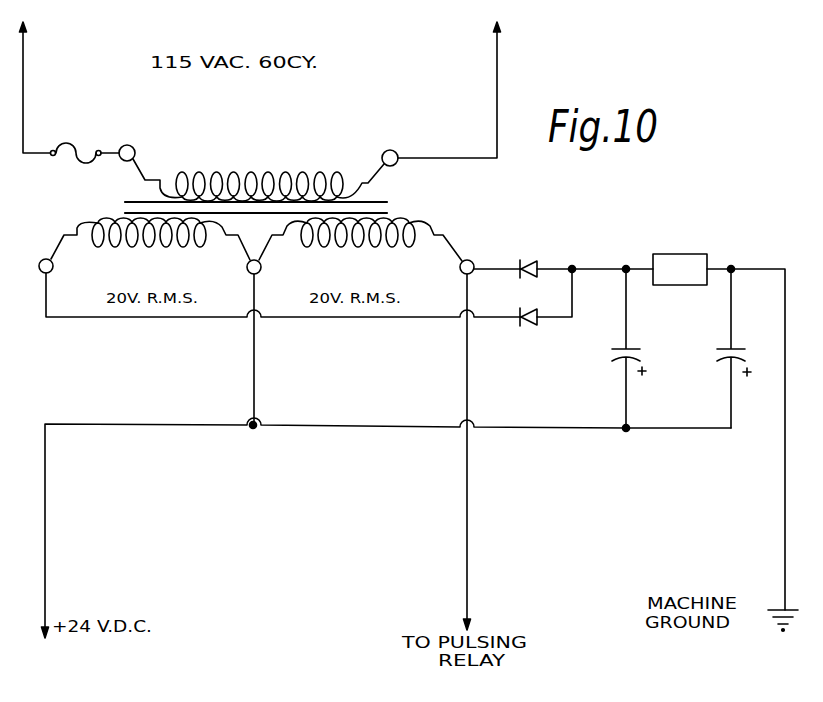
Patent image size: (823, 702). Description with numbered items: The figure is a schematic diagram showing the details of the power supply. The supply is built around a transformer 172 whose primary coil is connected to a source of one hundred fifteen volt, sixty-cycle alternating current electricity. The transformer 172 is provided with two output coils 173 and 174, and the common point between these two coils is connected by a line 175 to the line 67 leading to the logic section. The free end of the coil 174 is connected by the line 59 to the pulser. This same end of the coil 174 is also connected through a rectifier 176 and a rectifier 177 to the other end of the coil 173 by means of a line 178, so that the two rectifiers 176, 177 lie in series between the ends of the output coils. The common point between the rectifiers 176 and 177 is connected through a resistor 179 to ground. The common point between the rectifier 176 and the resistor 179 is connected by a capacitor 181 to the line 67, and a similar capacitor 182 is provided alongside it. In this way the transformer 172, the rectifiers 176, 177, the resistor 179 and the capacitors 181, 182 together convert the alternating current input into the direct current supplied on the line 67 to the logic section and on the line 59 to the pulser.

The transformer 172 is at (336, 171).
The output coil 173 is at (183, 247).
The output coil 174 is at (373, 247).
The line 175 is at (254, 373).
The rectifier 176 is at (546, 266).
The rectifier 177 is at (538, 320).
The line 178 is at (196, 318).
The resistor 179 is at (686, 286).
The capacitor 181 is at (630, 360).
The capacitor 182 is at (736, 360).
The line 67 is at (45, 517).
The line 59 is at (467, 533).